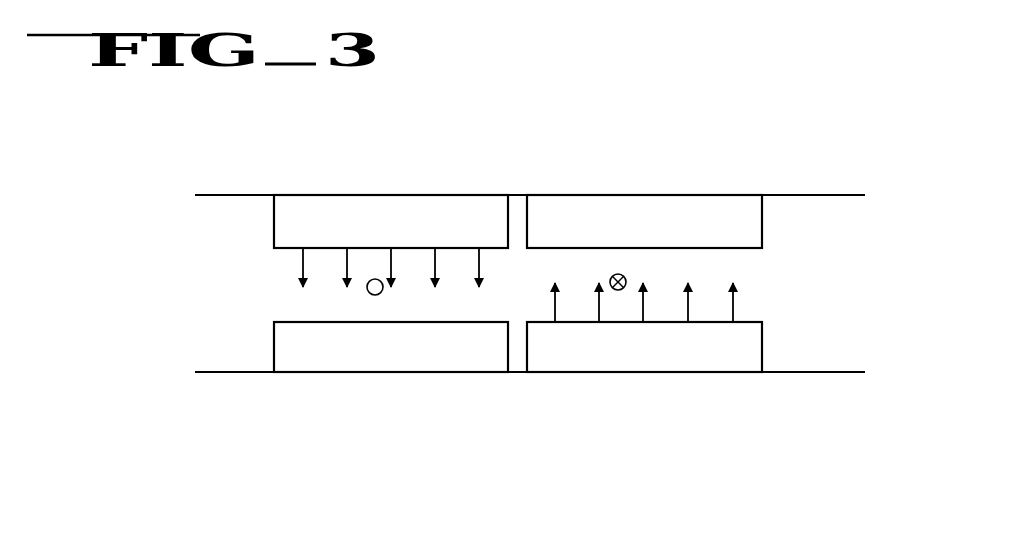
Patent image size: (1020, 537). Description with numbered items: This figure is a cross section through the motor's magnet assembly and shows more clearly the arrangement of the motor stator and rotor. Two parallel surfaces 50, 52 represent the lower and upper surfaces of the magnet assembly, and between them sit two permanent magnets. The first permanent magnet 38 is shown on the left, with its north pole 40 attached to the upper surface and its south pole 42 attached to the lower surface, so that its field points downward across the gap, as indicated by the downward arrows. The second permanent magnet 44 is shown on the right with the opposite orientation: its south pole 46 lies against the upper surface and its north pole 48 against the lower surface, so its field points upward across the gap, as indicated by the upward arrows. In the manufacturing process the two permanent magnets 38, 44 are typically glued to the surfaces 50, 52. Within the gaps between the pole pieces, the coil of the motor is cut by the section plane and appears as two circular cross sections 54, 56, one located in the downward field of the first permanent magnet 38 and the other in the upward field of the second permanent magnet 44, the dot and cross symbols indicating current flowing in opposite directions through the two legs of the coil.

The first permanent magnet 38 is at (346, 294).
The north pole 40 is at (295, 203).
The south pole 42 is at (307, 365).
The second permanent magnet 44 is at (693, 315).
The south pole 46 is at (762, 225).
The north pole 48 is at (695, 372).
The surface 50 is at (813, 372).
The surface 52 is at (840, 195).
The coil cross section 54 is at (382, 292).
The coil cross section 56 is at (616, 274).